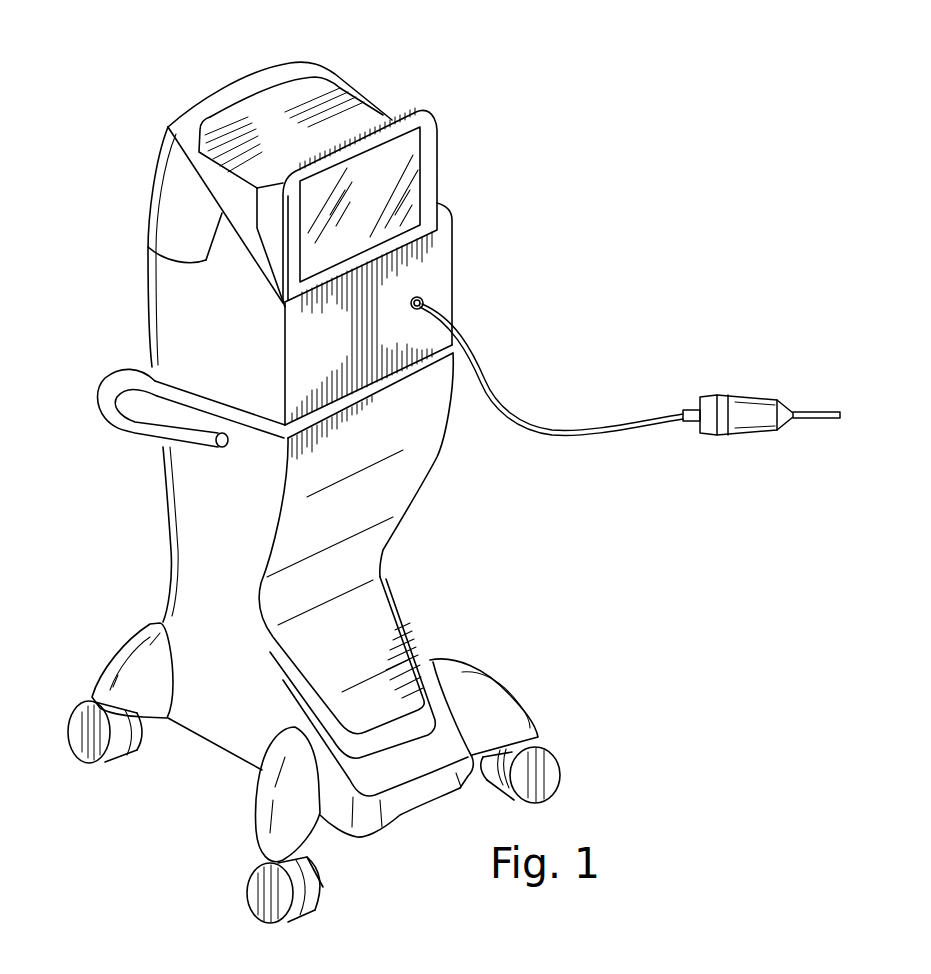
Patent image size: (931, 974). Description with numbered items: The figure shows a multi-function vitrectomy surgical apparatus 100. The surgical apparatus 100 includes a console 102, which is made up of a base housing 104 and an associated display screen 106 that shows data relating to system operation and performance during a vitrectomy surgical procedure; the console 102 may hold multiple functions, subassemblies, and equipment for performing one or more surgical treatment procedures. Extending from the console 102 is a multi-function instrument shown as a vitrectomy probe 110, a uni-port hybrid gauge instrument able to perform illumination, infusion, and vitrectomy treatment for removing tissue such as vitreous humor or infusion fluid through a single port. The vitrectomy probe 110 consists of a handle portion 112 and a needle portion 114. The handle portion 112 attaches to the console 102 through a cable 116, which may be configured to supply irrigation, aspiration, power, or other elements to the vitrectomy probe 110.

The surgical apparatus 100 is at (618, 92).
The console 102 is at (463, 278).
The base housing 104 is at (430, 468).
The display screen 106 is at (417, 143).
The vitrectomy probe 110 is at (762, 388).
The handle portion 112 is at (747, 432).
The needle portion 114 is at (817, 420).
The cable 116 is at (553, 424).